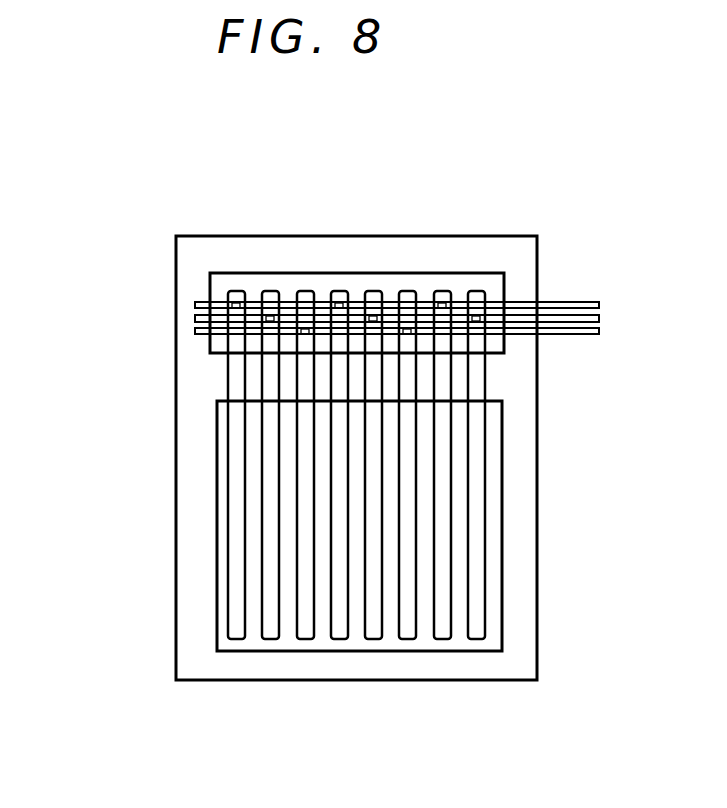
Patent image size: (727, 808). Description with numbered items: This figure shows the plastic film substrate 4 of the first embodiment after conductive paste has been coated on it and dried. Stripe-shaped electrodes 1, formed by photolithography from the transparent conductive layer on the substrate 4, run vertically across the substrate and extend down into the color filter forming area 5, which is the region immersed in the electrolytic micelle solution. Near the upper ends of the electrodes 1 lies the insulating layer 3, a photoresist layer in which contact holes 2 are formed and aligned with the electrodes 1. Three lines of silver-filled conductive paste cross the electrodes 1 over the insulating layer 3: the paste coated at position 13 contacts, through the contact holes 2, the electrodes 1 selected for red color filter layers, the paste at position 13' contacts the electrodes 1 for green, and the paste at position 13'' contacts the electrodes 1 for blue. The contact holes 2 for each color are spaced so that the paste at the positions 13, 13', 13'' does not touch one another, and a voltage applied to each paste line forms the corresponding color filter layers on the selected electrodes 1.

The electrodes 1 is at (232, 376).
The contact holes 2 is at (478, 293).
The insulating layer 3 is at (392, 285).
The substrate 4 is at (522, 523).
The color filter forming area 5 is at (495, 582).
The position of conductive paste for red 13 is at (415, 287).
The position of conductive paste for green 13' is at (421, 251).
The position of conductive paste for blue 13'' is at (397, 234).